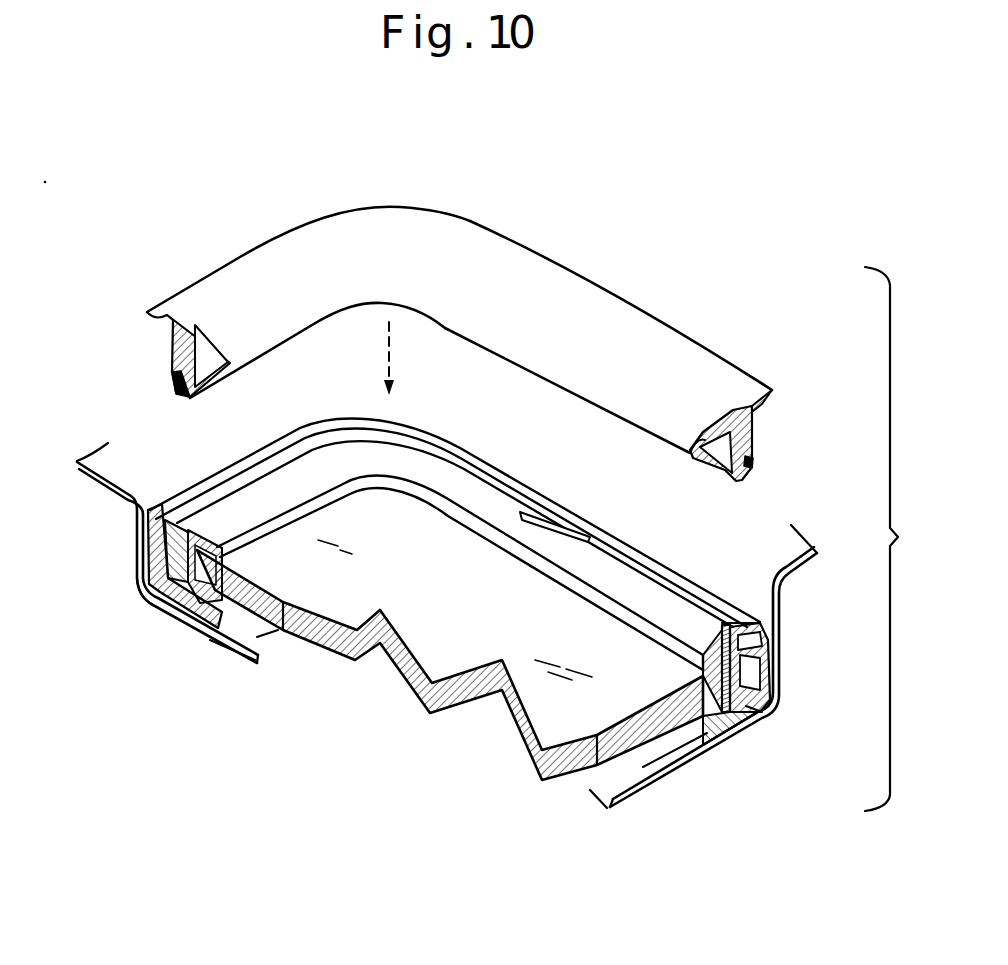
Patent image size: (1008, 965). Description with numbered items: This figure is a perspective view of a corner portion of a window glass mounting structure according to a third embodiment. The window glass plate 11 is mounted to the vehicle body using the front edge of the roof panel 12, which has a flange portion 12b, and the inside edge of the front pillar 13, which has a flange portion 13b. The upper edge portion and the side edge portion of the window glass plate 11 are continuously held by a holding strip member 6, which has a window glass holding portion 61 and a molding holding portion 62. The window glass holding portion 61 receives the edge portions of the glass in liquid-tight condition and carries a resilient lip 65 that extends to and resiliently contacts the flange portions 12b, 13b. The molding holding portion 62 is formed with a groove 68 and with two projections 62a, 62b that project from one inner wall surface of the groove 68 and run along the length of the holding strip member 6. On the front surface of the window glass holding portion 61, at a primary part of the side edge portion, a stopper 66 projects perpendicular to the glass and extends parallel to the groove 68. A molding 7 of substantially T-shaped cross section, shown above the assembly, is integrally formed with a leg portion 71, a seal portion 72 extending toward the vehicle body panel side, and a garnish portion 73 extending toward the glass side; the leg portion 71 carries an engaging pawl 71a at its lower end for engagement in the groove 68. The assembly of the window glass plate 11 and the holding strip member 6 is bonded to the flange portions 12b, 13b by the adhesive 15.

The molding 7 is at (561, 264).
The leg portion 71 is at (722, 457).
The engaging pawl 71a is at (173, 378).
The seal portion 72 is at (775, 393).
The garnish portion 73 is at (692, 449).
The roof panel 12 is at (105, 486).
The flange portion 12b is at (160, 607).
The resilient lip 65 is at (210, 633).
The adhesive 15 is at (238, 627).
The window glass plate 11 is at (430, 642).
The holding strip member 6 is at (476, 547).
The stopper 66 is at (617, 558).
The front pillar 13 is at (807, 563).
The flange portion 13b is at (703, 750).
The molding holding portion 62 is at (777, 695).
The projection 62a is at (755, 678).
The projection 62b is at (773, 648).
The groove 68 is at (773, 713).
The window glass holding portion 61 is at (743, 727).